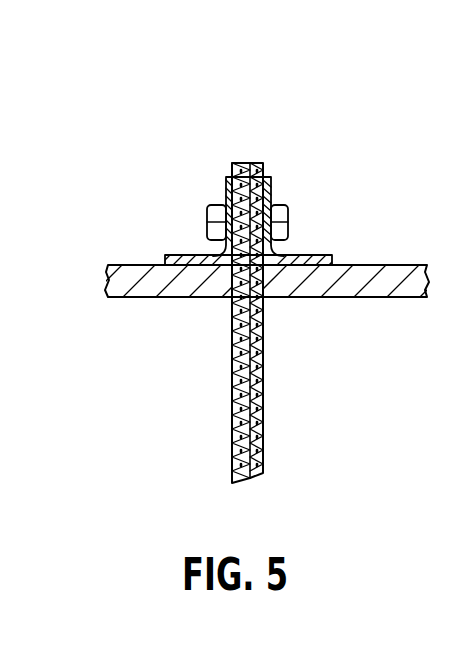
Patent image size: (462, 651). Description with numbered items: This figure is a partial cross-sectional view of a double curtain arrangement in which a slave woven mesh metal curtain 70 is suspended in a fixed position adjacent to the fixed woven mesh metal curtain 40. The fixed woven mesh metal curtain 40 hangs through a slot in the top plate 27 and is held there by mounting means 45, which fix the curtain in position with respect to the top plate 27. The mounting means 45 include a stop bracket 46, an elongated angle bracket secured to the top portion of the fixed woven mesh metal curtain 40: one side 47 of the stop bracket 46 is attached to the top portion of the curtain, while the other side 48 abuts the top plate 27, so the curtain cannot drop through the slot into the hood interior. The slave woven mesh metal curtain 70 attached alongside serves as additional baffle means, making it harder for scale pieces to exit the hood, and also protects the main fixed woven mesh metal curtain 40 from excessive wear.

The top plate 27 is at (127, 270).
The fixed woven mesh metal curtain 40 is at (268, 362).
The mounting means 45 is at (176, 140).
The stop bracket 46 is at (308, 229).
The side of stop bracket 47 is at (272, 192).
The side of stop bracket 48 is at (327, 257).
The slave woven mesh metal curtain 70 is at (233, 410).